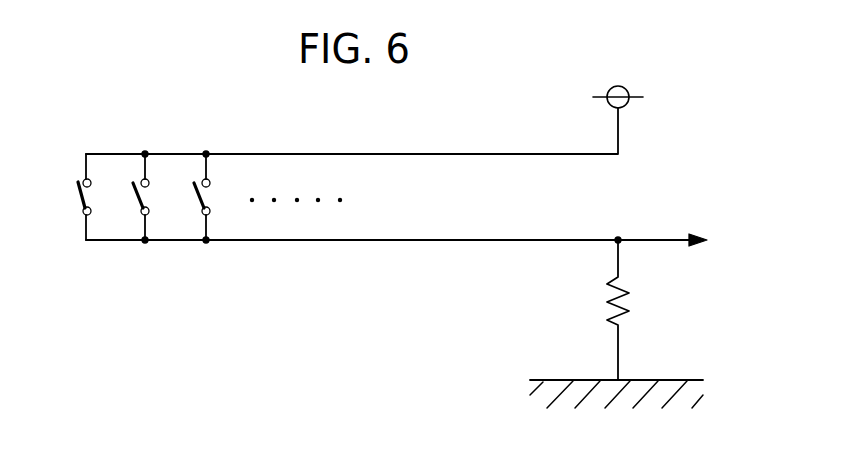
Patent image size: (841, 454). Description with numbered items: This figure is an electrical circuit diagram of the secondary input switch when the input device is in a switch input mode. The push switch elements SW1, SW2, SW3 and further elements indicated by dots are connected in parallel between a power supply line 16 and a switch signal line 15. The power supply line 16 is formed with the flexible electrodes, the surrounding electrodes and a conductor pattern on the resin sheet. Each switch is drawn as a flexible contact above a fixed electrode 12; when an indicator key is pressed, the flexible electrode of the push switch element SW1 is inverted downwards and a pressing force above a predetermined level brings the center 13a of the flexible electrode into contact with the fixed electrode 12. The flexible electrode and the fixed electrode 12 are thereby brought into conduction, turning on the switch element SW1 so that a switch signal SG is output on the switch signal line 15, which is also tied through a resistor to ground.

The fixed electrode 12 is at (83, 212).
The center of the flexible electrode 13a is at (90, 181).
The switch signal line 15 is at (410, 242).
The power supply line 16 is at (403, 153).
The push switch element SW1 is at (96, 208).
The push switch element SW2 is at (162, 200).
The push switch element SW3 is at (223, 200).
The switch signal SG is at (733, 243).